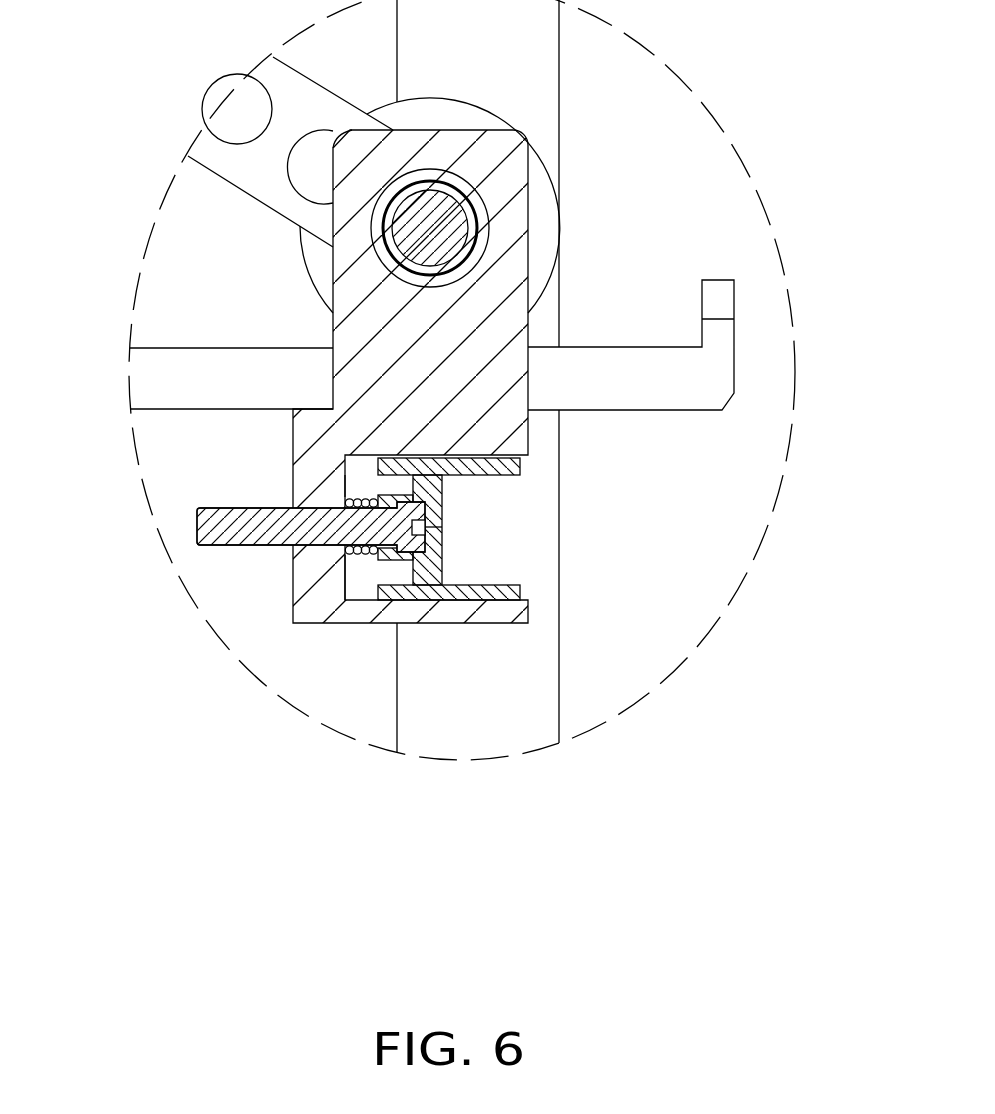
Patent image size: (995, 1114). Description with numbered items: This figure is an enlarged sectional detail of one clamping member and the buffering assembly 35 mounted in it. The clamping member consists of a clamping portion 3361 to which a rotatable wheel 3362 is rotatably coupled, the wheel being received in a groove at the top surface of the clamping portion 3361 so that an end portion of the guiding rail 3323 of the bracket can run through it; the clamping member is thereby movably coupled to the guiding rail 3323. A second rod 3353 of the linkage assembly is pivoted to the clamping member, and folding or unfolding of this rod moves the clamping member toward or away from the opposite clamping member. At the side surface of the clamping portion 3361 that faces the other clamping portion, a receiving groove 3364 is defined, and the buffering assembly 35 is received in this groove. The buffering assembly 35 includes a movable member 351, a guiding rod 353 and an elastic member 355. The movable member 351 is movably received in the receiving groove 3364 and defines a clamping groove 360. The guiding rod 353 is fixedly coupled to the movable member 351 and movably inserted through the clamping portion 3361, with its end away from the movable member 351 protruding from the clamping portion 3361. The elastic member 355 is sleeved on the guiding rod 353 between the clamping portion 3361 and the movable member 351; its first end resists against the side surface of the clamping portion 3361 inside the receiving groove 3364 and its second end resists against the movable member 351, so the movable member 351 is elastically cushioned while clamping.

The buffering assembly 35 is at (185, 741).
The movable member 351 is at (430, 570).
The guiding rod 353 is at (237, 533).
The elastic member 355 is at (347, 556).
The clamping groove 360 is at (472, 543).
The guiding rail 3323 is at (623, 372).
The second rod 3353 is at (285, 85).
The clamping portion 3361 is at (487, 405).
The rotatable wheel 3362 is at (538, 195).
The receiving groove 3364 is at (362, 478).